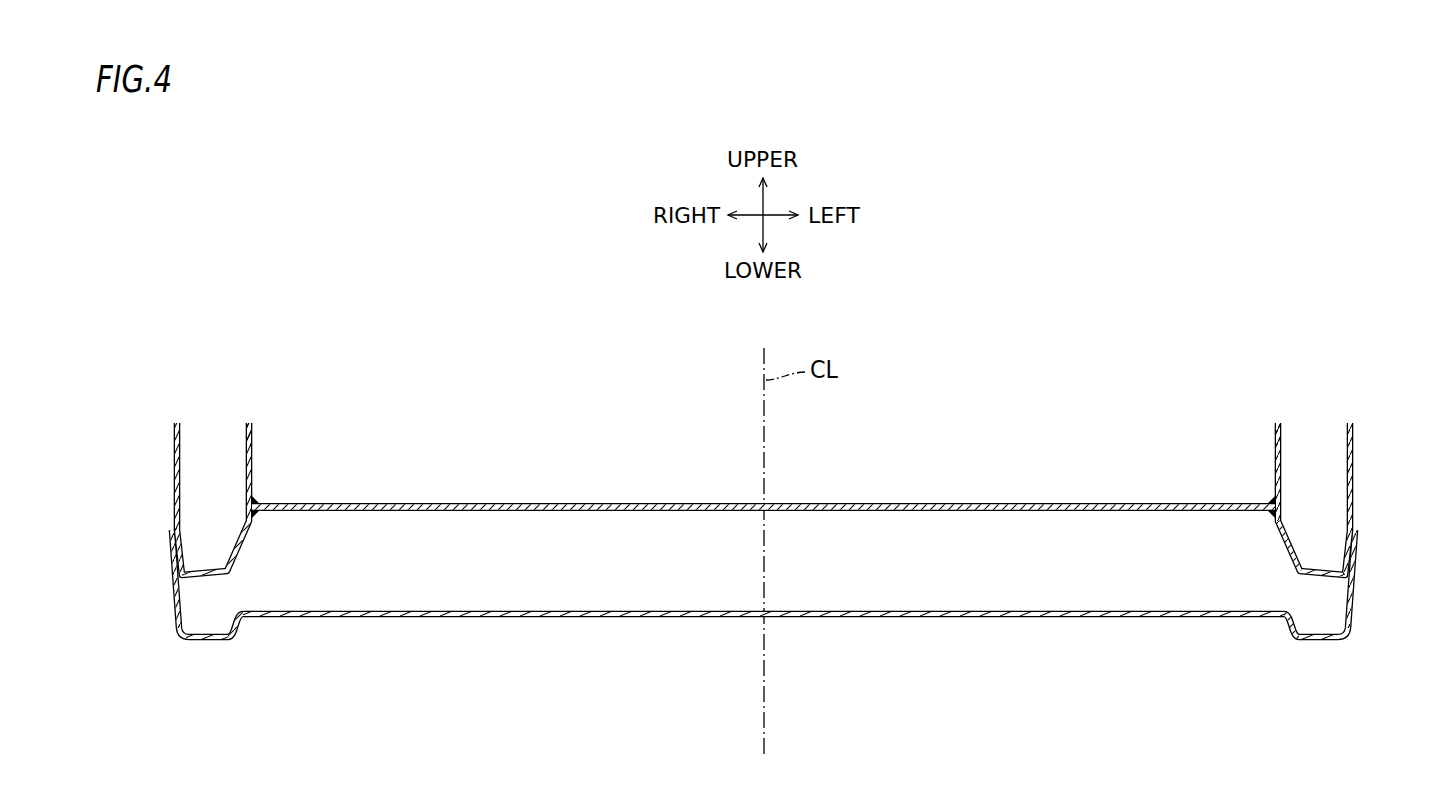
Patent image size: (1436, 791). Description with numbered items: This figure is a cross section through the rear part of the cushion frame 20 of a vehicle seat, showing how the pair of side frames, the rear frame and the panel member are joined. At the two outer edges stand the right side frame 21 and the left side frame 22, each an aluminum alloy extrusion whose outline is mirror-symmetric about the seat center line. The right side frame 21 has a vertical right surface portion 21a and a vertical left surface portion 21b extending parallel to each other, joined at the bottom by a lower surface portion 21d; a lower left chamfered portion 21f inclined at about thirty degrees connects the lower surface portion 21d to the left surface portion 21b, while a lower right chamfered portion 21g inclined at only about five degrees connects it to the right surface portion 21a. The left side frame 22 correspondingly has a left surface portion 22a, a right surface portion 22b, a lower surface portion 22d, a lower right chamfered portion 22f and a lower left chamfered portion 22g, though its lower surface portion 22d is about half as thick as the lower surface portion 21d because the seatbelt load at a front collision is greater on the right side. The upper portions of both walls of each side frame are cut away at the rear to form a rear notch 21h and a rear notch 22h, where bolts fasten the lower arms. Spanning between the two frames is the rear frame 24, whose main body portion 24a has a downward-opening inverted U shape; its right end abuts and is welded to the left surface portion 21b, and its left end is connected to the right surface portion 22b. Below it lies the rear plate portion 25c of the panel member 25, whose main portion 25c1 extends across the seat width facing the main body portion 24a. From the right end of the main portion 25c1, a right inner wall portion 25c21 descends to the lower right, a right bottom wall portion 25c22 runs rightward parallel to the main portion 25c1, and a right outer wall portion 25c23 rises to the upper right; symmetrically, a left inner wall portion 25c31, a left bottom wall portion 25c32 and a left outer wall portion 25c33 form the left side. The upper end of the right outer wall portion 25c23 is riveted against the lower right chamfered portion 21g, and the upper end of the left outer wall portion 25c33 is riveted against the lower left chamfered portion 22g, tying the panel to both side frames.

The cushion frame 20 is at (764, 471).
The right side frame 21 is at (227, 471).
The right surface portion 21a is at (173, 467).
The left surface portion 21b is at (253, 463).
The lower surface portion 21d is at (207, 583).
The lower left chamfered portion 21f is at (243, 553).
The lower right chamfered portion 21g is at (183, 552).
The rear notch 21h is at (249, 422).
The left side frame 22 is at (1301, 473).
The left surface portion 22a is at (1355, 463).
The right surface portion 22b is at (1274, 462).
The lower surface portion 22d is at (1322, 578).
The lower right chamfered portion 22f is at (1284, 552).
The lower left chamfered portion 22g is at (1345, 548).
The rear notch 22h is at (1277, 422).
The rear frame 24 is at (763, 471).
The main body portion 24a is at (827, 503).
The panel member 25 is at (775, 622).
The rear plate portion 25c is at (775, 622).
The main portion 25c1 is at (852, 618).
The right inner wall portion 25c21 is at (237, 628).
The right bottom wall portion 25c22 is at (205, 641).
The right outer wall portion 25c23 is at (175, 592).
The left inner wall portion 25c31 is at (1290, 627).
The left bottom wall portion 25c32 is at (1322, 641).
The left outer wall portion 25c33 is at (1352, 588).